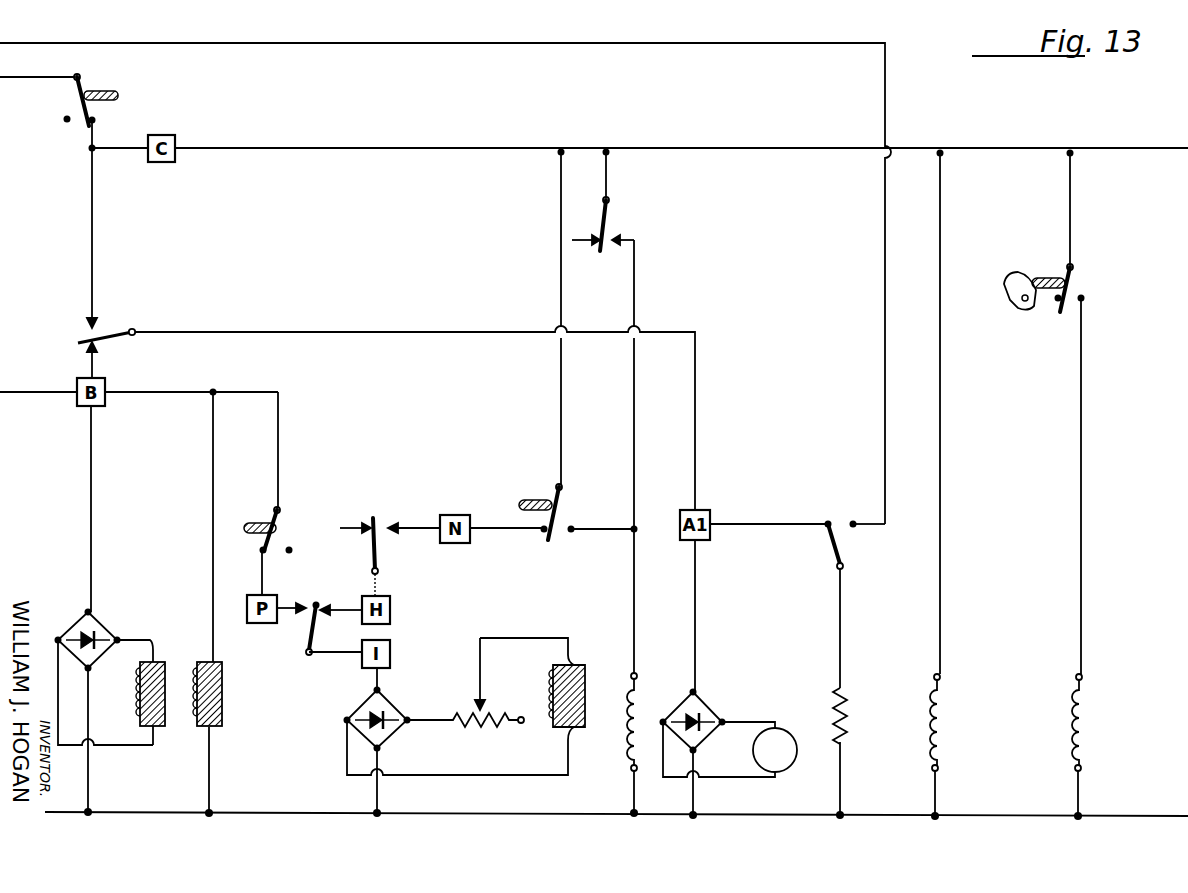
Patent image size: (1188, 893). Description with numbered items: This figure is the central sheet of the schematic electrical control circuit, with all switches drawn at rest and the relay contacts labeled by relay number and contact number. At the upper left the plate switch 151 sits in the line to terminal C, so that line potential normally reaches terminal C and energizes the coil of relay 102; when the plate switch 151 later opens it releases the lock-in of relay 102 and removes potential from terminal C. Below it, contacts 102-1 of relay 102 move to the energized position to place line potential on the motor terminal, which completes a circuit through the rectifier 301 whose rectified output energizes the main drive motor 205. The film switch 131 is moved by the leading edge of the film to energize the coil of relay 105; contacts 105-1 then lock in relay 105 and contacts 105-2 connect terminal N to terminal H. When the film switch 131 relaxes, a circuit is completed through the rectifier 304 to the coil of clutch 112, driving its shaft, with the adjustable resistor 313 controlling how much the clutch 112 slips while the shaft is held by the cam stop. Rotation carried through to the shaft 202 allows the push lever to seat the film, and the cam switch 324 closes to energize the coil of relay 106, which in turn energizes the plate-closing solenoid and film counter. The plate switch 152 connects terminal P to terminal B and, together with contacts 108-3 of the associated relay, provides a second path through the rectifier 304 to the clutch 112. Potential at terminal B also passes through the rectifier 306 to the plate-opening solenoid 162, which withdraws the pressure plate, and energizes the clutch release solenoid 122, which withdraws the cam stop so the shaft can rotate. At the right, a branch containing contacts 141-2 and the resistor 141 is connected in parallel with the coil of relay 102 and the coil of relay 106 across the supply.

The plate switch 151 is at (73, 112).
The contacts 01 of relay 102 102-1 is at (90, 332).
The plate switch 152 is at (281, 538).
The contacts 03 of relay 108 108-3 is at (306, 602).
The contacts 02 of relay 105 105-2 is at (382, 522).
The contacts 01 of relay 105 105-1 is at (608, 238).
The film switch 131 is at (565, 523).
The contacts 02 of relay 141 141-2 is at (843, 520).
The cam switch 324 is at (1074, 296).
The shaft 202 is at (1030, 312).
The rectifier 306 is at (97, 630).
The plate-opening solenoid 162 is at (152, 680).
The clutch release solenoid 122 is at (222, 703).
The rectifier 304 is at (368, 704).
The resistor 313 is at (474, 726).
The clutch 112 is at (555, 670).
The relay 105 is at (626, 740).
The rectifier 301 is at (704, 710).
The main drive motor 205 is at (788, 763).
The resistor 141 is at (847, 713).
The relay 102 is at (940, 715).
The relay 106 is at (1085, 715).